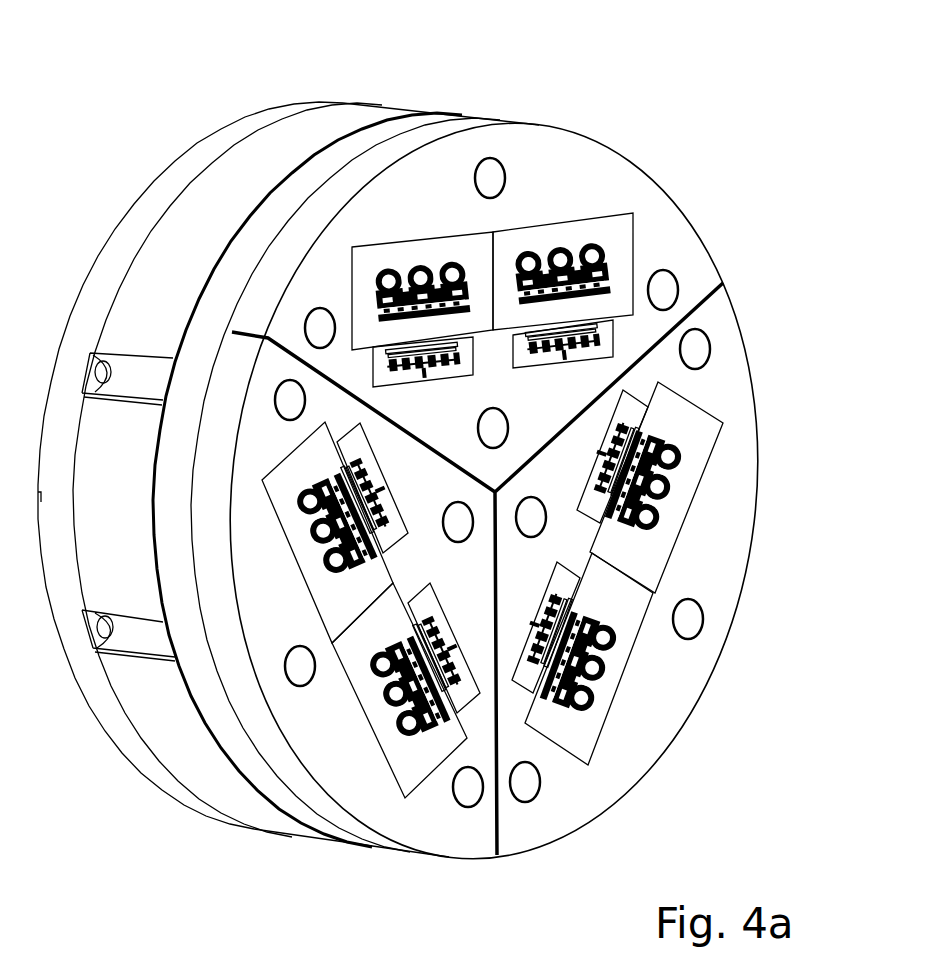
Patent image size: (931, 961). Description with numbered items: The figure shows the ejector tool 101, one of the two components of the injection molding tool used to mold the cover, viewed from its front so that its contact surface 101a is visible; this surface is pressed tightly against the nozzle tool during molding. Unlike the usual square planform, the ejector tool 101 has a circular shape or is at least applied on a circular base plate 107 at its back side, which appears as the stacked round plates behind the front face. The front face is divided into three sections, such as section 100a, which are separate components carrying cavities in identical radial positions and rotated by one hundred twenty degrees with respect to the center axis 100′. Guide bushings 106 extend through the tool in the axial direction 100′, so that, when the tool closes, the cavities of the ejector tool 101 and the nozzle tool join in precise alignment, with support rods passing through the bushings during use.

The axial direction 100′ is at (472, 103).
The section 100a is at (422, 285).
The contact surface 101a is at (563, 268).
The ejector tool 101 is at (326, 482).
The guide bushing 106 is at (308, 326).
The circular base plate 107 is at (87, 668).